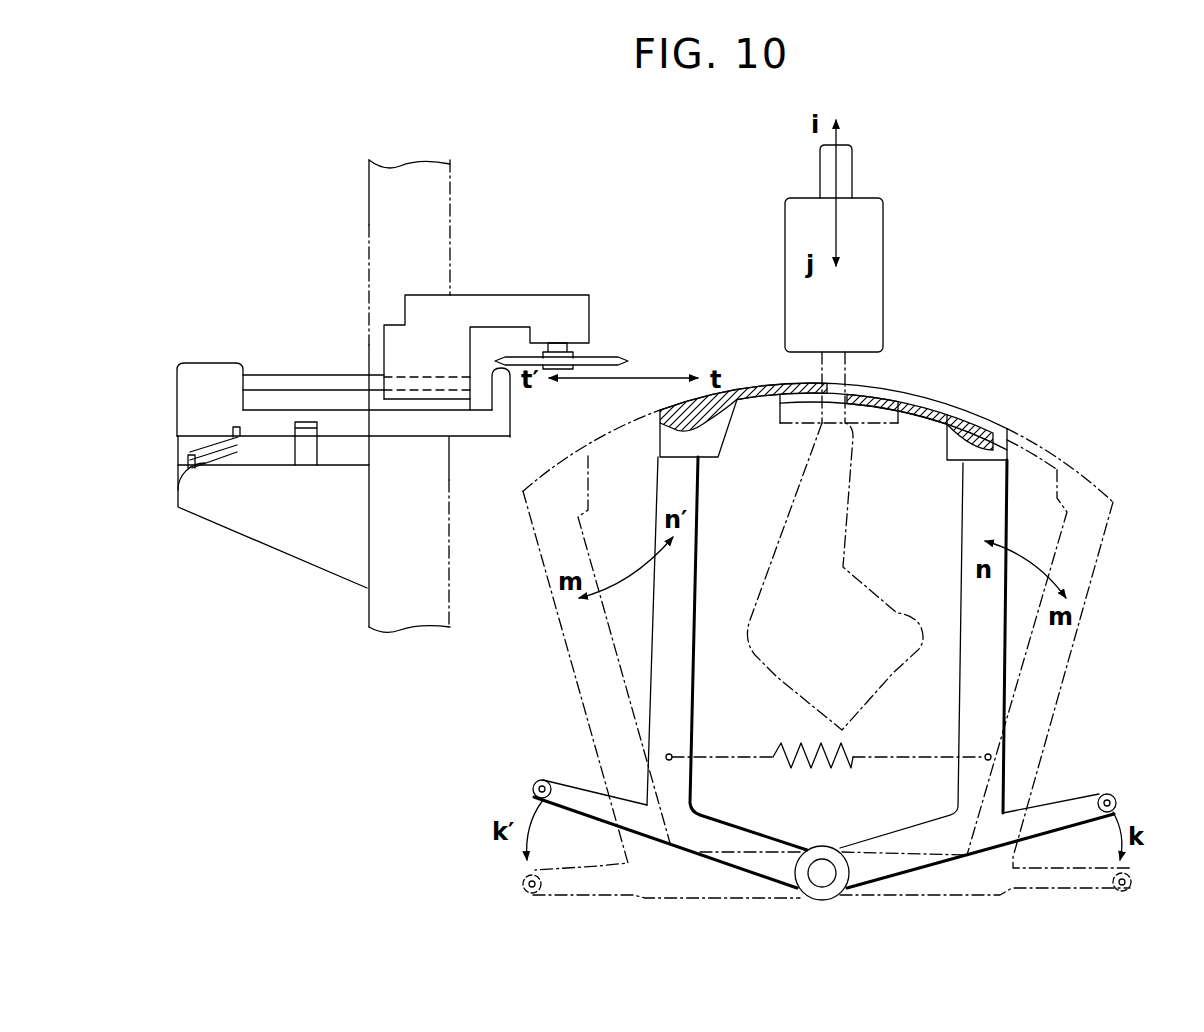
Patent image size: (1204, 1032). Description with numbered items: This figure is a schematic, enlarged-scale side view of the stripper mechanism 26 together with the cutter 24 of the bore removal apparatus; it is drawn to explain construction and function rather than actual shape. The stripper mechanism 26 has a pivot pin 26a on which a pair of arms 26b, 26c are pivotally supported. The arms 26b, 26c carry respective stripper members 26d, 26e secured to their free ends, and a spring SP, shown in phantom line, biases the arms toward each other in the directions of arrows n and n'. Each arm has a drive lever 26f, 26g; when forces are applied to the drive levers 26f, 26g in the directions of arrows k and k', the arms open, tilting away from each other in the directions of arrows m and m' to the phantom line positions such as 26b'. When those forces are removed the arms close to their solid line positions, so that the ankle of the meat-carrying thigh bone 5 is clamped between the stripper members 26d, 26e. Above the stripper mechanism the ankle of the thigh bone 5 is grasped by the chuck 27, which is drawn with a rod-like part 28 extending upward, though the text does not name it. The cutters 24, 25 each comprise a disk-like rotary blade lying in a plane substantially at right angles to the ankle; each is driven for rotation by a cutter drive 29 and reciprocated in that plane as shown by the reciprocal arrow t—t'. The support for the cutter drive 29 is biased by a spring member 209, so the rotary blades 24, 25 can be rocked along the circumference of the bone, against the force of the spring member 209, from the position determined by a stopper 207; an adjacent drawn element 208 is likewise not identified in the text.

The meat-carrying thigh bone 5 is at (752, 625).
The cutter 24 is at (593, 341).
The cutter 25 is at (611, 357).
The stripper mechanism 26 is at (998, 388).
The pivot pin 26a is at (841, 893).
The arm 26b is at (1092, 685).
The phantom line position of arm 26b' is at (1092, 685).
The arm 26c is at (565, 650).
The stripper member 26d is at (915, 422).
The stripper member 26e is at (752, 398).
The drive lever 26f is at (1112, 792).
The drive lever 26g is at (533, 785).
The chuck 27 is at (883, 283).
The piston rod 28 is at (852, 186).
The cutter drive 29 is at (470, 403).
The stopper 207 is at (306, 456).
The leaf spring 208 is at (188, 452).
The spring member 209 is at (178, 492).
The spring SP is at (828, 773).